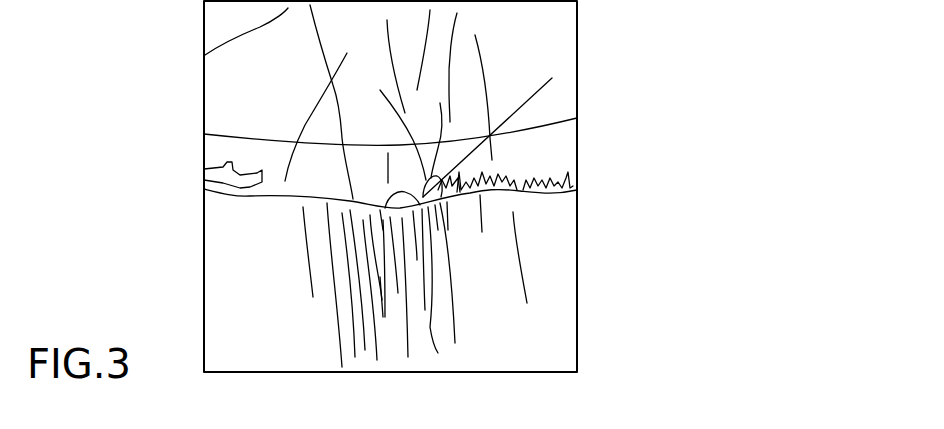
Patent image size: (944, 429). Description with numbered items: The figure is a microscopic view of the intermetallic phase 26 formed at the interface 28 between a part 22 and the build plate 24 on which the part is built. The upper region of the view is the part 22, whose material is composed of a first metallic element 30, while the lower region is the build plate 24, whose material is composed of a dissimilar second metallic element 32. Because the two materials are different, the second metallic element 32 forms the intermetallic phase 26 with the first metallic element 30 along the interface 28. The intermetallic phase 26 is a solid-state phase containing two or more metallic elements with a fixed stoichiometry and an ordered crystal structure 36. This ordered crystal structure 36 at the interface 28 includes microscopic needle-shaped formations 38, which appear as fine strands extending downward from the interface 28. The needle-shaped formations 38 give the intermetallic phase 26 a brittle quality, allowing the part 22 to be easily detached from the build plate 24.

The part 22 is at (204, 92).
The build plate 24 is at (204, 290).
The intermetallic phase 26 is at (204, 193).
The interface 28 is at (593, 182).
The first metallic element 30 is at (319, 76).
The second metallic element 32 is at (287, 337).
The ordered crystal structure 36 is at (526, 183).
The needle-shaped formations 38 is at (345, 230).